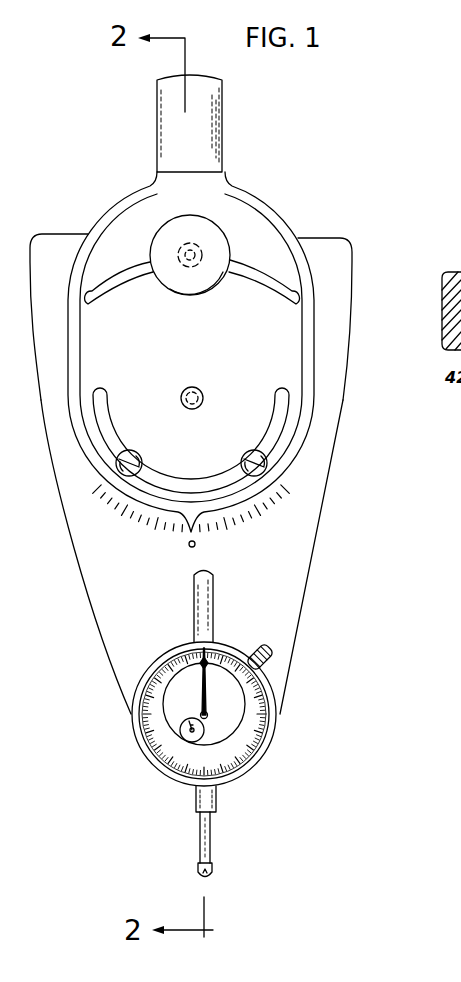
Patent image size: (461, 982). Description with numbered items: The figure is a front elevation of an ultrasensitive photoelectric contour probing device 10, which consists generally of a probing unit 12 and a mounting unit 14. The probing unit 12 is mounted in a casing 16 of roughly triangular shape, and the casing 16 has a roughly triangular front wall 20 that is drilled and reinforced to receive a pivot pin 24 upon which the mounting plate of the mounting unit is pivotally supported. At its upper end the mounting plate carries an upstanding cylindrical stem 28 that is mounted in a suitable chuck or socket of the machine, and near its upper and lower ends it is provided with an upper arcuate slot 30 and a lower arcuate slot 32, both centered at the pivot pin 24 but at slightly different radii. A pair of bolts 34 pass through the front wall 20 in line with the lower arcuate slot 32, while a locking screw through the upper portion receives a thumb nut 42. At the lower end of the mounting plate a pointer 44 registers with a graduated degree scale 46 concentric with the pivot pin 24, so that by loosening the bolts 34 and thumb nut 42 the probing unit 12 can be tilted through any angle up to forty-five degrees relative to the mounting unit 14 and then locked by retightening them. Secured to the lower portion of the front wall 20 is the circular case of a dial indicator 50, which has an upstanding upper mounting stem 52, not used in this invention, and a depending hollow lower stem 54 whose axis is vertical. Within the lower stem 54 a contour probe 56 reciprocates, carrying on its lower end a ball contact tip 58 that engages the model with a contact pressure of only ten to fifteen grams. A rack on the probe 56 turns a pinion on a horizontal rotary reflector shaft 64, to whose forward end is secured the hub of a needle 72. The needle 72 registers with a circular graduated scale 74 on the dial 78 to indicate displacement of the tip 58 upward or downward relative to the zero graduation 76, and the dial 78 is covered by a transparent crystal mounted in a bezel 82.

The ultrasensitive photoelectric contour probing device 10 is at (306, 224).
The probing unit 12 is at (65, 229).
The mounting unit 14 is at (140, 180).
The casing 16 is at (358, 256).
The front wall 20 is at (302, 562).
The pivot pin 24 is at (205, 398).
The cylindrical stem 28 is at (217, 130).
The upper arcuate slot 30 is at (127, 266).
The lower arcuate slot 32 is at (177, 485).
The bolts 34 is at (131, 450).
The thumb nut 42 is at (215, 232).
The pointer 44 is at (197, 532).
The graduated degree scale 46 is at (148, 525).
The dial indicator 50 is at (216, 728).
The upper mounting stem 52 is at (214, 606).
The lower stem 54 is at (195, 800).
The contour probe 56 is at (211, 838).
The ball contact tip 58 is at (212, 868).
The rotary reflector shaft 64 is at (208, 714).
The needle 72 is at (203, 692).
The circular graduated scale 74 is at (156, 754).
The zero graduation 76 is at (208, 652).
The dial 78 is at (253, 717).
The bezel 82 is at (262, 758).